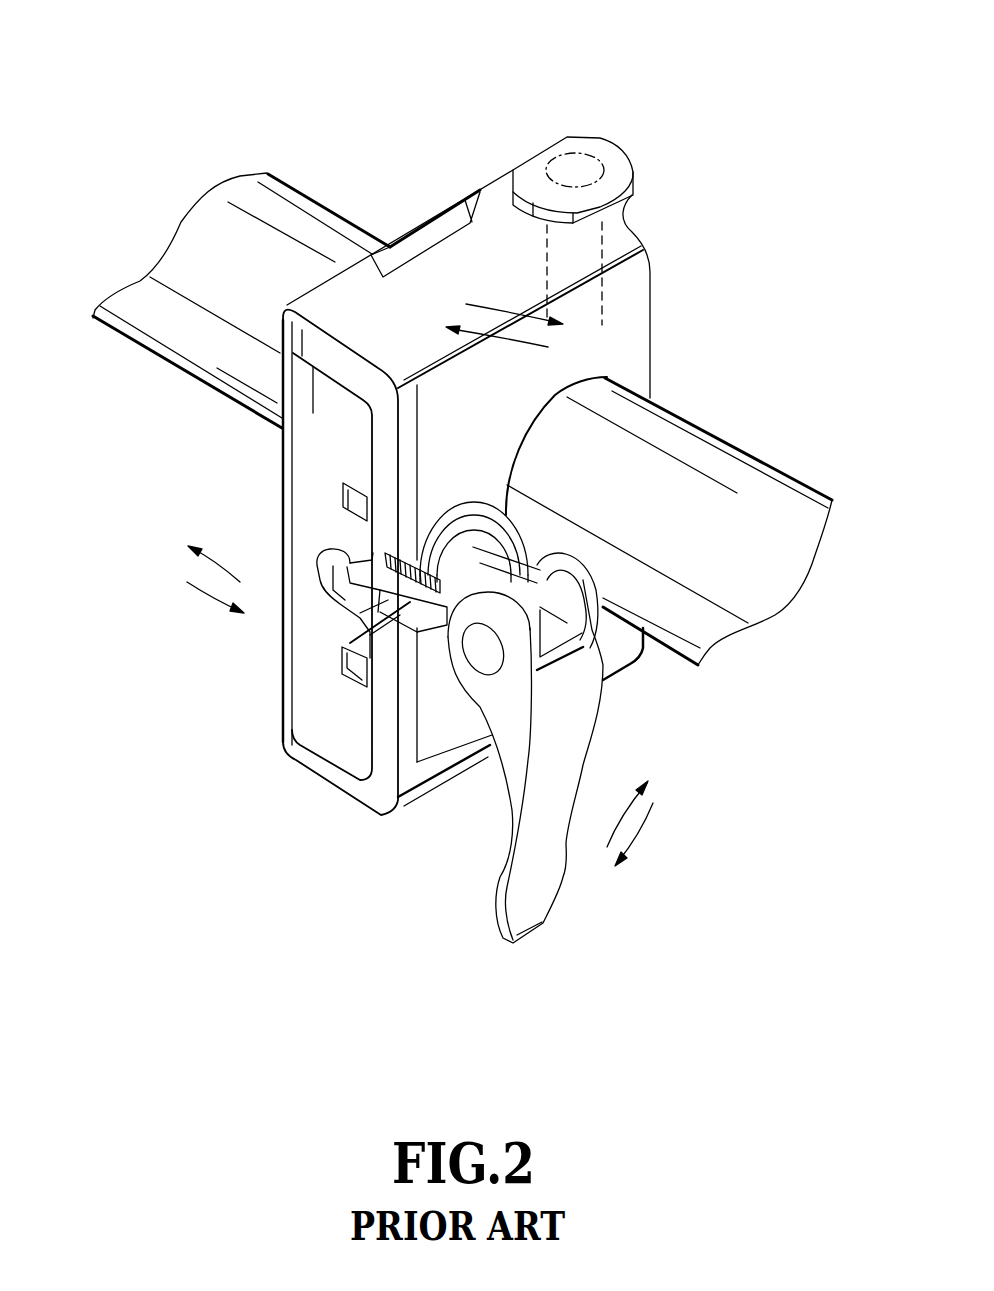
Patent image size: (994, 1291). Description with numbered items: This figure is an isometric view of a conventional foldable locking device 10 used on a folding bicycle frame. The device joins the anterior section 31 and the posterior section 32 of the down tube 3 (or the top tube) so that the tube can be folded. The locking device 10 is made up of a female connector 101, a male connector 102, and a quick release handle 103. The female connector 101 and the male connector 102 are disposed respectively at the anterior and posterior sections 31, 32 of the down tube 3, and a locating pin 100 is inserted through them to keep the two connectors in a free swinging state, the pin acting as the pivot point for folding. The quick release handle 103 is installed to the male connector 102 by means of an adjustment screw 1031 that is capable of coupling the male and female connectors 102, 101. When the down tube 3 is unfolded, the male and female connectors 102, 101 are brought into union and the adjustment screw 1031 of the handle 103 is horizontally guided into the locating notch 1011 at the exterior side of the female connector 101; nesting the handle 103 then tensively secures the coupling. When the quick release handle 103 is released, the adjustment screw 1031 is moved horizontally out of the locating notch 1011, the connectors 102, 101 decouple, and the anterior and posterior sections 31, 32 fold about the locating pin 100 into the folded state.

The down tube 3 is at (473, 346).
The foldable locking device 10 is at (572, 128).
The anterior section 31 is at (780, 469).
The posterior section 32 is at (290, 194).
The locating pin 100 is at (622, 160).
The female connector 101 is at (640, 332).
The male connector 102 is at (305, 440).
The quick release handle 103 is at (558, 873).
The locating notch 1011 is at (345, 652).
The adjustment screw 1031 is at (410, 798).